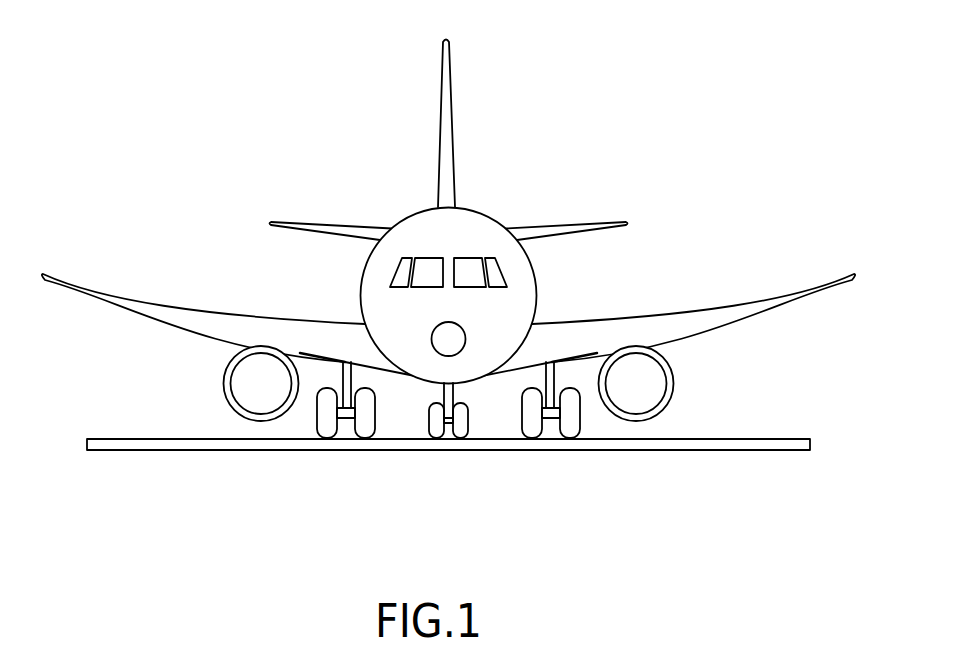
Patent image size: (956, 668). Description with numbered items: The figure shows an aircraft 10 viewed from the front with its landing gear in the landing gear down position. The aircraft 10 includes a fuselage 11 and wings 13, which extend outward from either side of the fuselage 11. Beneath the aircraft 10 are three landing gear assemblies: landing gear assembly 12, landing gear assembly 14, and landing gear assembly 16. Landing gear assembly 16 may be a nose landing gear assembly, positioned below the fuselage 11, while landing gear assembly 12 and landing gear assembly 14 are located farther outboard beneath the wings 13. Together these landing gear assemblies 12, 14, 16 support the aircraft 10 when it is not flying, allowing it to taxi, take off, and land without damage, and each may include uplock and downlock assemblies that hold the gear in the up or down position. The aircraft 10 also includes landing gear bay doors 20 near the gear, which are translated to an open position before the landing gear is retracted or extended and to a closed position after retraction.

The aircraft 10 is at (293, 126).
The fuselage 11 is at (475, 232).
The landing gear assembly 12 is at (591, 421).
The wings 13 is at (173, 318).
The landing gear assembly 14 is at (302, 422).
The landing gear assembly 16 is at (418, 416).
The landing gear bay doors 20 is at (333, 359).